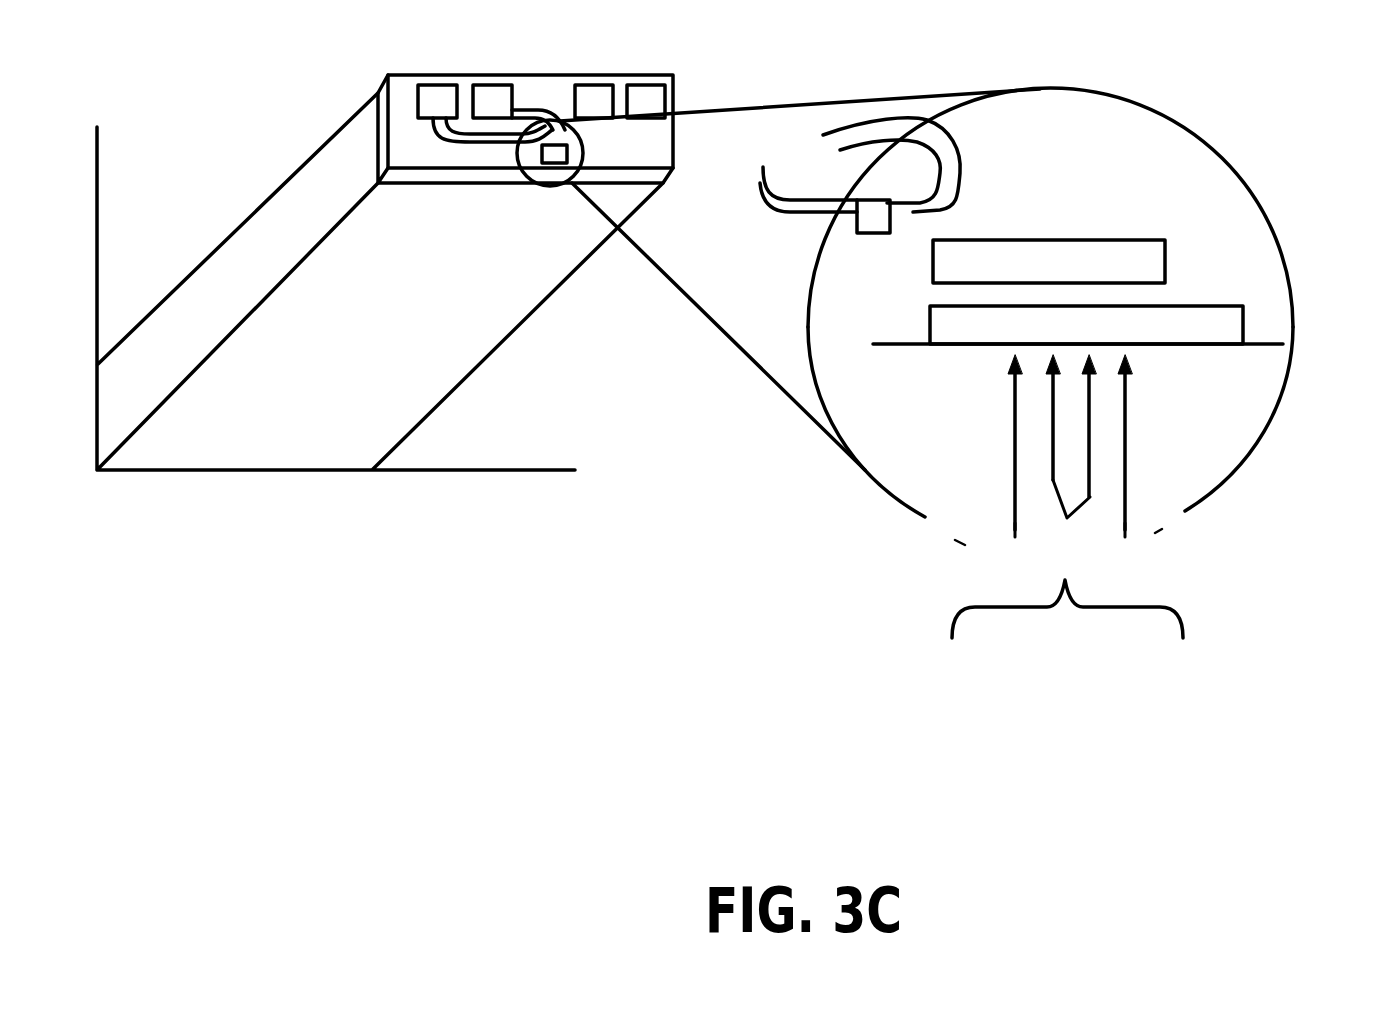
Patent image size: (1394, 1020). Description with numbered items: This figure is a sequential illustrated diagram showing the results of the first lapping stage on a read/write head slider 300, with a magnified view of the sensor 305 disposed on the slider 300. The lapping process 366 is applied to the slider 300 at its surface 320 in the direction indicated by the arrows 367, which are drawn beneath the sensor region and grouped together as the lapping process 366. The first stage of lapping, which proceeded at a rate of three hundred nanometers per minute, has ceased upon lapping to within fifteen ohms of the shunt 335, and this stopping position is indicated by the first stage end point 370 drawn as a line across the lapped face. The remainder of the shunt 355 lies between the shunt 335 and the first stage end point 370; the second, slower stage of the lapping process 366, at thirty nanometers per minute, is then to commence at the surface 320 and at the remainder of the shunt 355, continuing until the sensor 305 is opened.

The slider 300 is at (347, 142).
The surface 320 is at (437, 343).
The sensor 305 is at (873, 213).
The shunt 335 is at (1137, 252).
The remainder of shunt 355 is at (1210, 323).
The first stage end point 370 is at (1192, 345).
The lapping process 366 is at (1067, 501).
The arrows 367 is at (1125, 530).